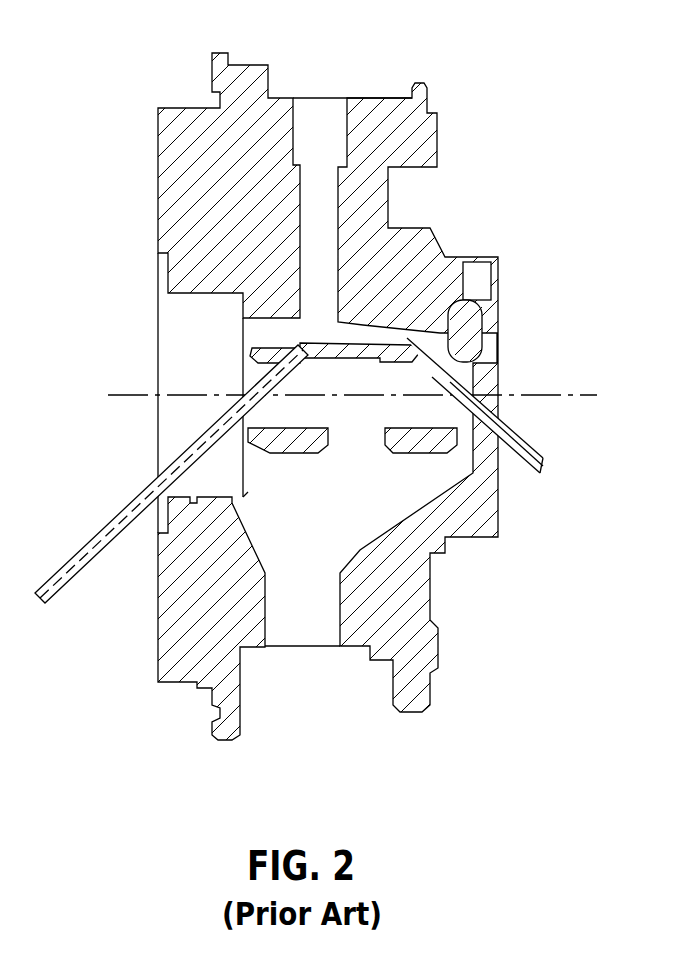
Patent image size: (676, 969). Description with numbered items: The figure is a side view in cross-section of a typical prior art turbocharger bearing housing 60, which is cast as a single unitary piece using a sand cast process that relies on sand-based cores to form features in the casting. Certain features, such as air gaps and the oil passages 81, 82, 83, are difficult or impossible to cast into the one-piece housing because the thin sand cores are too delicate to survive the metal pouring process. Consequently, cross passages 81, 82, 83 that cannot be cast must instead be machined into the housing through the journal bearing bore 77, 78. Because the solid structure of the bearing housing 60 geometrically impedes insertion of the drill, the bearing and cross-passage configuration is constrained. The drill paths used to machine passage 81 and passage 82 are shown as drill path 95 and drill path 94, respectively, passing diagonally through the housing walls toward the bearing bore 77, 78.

The turbocharger bearing housing 60 is at (175, 110).
The journal bearing bore 77 is at (433, 426).
The journal bearing bore 78 is at (292, 426).
The oil passage 81 is at (440, 353).
The oil passage 82 is at (297, 343).
The oil passage 83 is at (370, 340).
The drill path 94 is at (113, 517).
The drill path 95 is at (545, 462).